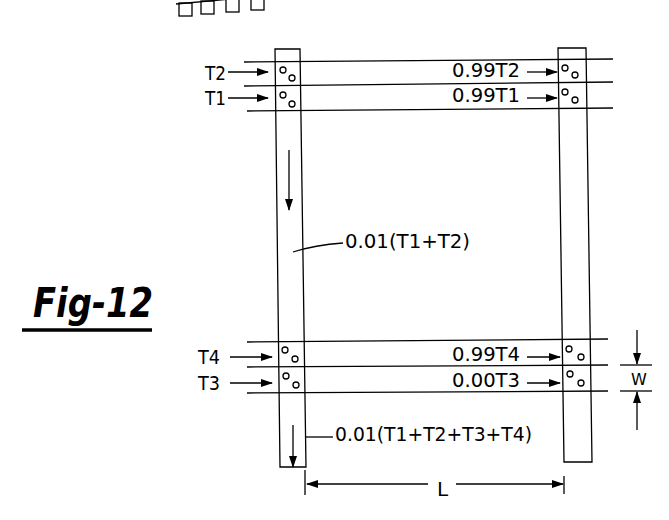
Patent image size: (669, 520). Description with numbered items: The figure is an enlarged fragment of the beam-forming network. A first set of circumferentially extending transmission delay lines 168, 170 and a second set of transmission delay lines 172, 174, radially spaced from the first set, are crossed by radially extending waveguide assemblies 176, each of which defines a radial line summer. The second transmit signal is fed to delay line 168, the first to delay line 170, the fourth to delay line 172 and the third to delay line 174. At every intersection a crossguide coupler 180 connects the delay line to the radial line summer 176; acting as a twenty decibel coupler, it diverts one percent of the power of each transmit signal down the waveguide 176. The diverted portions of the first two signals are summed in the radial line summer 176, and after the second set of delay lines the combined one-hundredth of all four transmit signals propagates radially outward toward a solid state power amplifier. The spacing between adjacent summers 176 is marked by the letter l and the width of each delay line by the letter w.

The transmission delay line 168 is at (391, 72).
The transmission delay line 170 is at (393, 98).
The transmission delay line 172 is at (336, 352).
The transmission delay line 174 is at (407, 378).
The waveguide assembly 176 is at (302, 192).
The crossguide coupler 180 is at (296, 70).